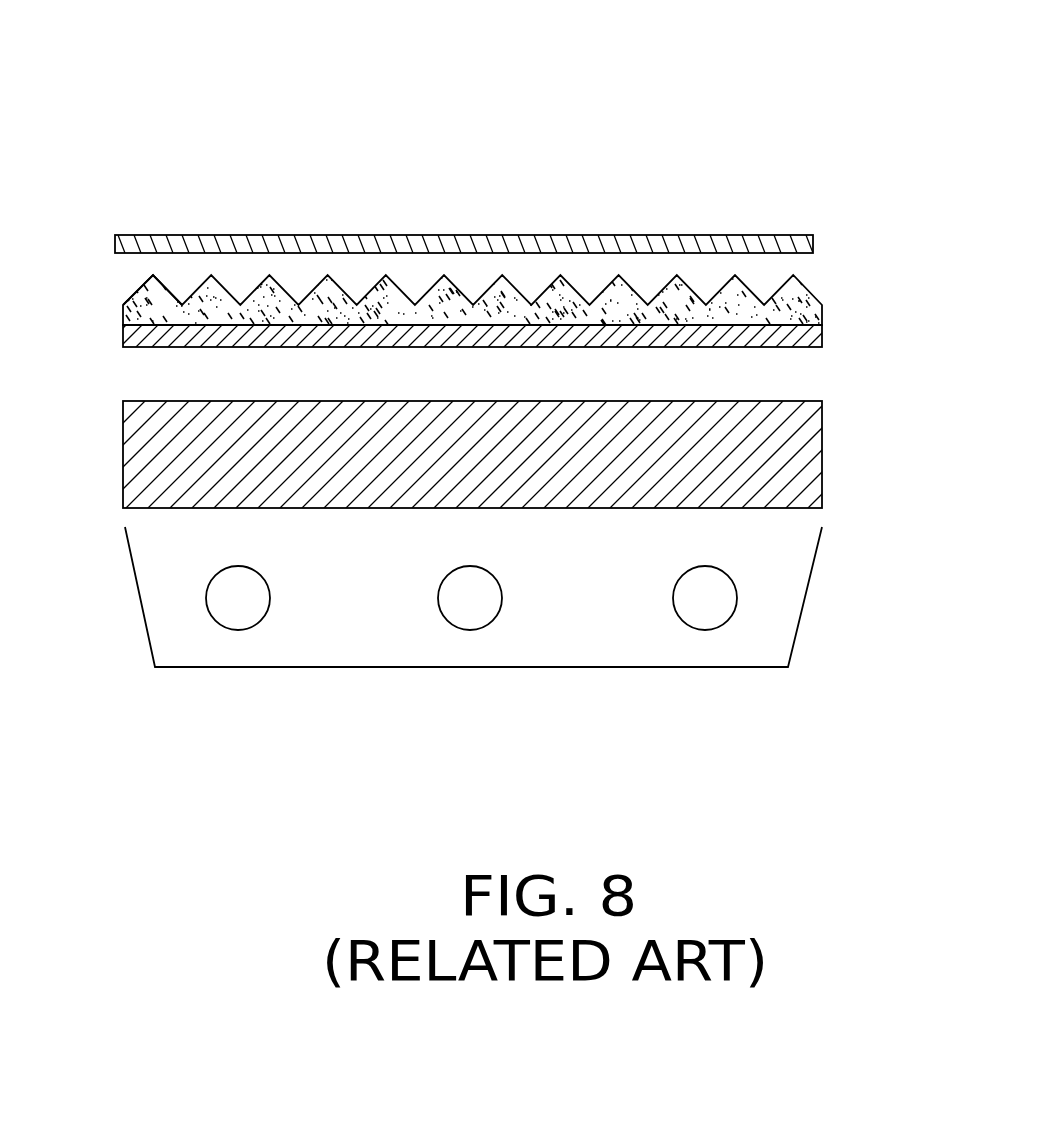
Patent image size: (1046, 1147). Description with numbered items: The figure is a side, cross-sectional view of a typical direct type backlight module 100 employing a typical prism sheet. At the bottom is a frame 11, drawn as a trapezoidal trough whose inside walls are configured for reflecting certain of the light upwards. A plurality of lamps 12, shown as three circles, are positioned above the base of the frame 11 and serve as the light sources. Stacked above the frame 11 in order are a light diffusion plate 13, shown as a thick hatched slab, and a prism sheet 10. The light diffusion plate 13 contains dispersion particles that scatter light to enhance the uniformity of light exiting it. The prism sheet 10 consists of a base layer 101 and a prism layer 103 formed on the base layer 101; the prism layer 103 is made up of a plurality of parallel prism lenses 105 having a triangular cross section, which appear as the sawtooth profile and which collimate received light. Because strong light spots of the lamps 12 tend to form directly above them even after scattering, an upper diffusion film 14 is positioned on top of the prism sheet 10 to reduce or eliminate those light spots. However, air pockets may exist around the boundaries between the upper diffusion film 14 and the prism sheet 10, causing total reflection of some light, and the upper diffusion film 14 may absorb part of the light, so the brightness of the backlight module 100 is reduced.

The direct type backlight module 100 is at (392, 80).
The upper diffusion film 14 is at (813, 235).
The prism sheet 10 is at (534, 311).
The prism layer 103 is at (797, 318).
The base layer 101 is at (807, 338).
The prism lens 105 is at (150, 280).
The light diffusion plate 13 is at (822, 452).
The frame 11 is at (803, 610).
The lamp 12 is at (713, 590).